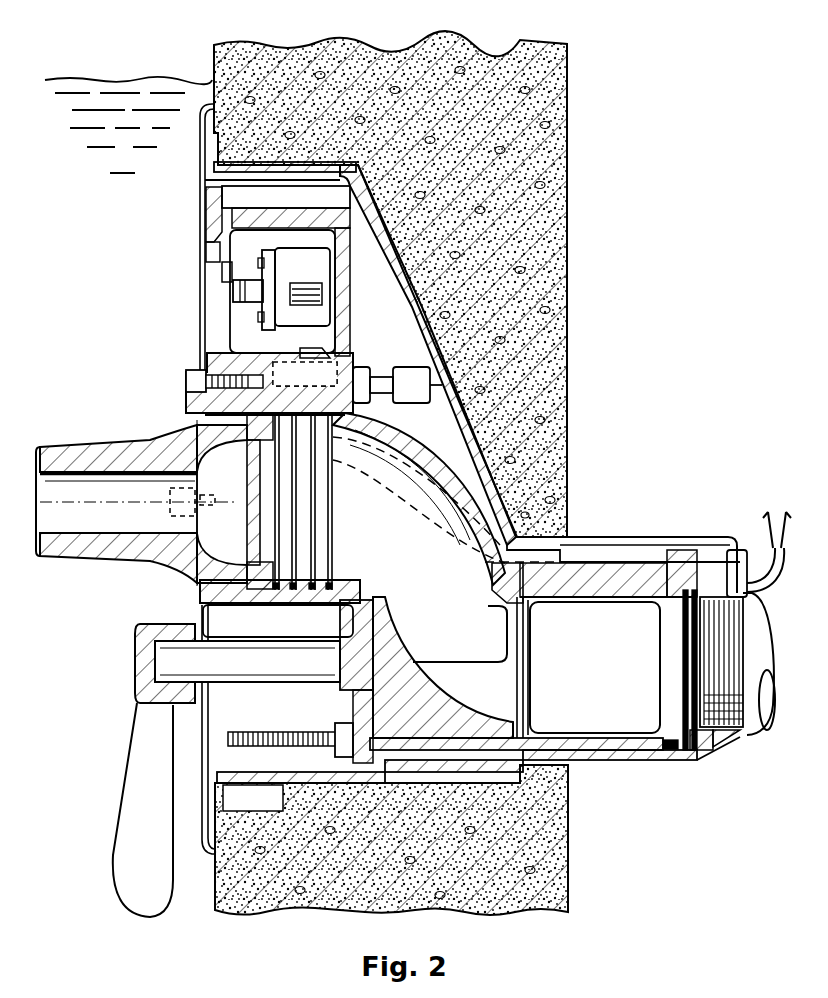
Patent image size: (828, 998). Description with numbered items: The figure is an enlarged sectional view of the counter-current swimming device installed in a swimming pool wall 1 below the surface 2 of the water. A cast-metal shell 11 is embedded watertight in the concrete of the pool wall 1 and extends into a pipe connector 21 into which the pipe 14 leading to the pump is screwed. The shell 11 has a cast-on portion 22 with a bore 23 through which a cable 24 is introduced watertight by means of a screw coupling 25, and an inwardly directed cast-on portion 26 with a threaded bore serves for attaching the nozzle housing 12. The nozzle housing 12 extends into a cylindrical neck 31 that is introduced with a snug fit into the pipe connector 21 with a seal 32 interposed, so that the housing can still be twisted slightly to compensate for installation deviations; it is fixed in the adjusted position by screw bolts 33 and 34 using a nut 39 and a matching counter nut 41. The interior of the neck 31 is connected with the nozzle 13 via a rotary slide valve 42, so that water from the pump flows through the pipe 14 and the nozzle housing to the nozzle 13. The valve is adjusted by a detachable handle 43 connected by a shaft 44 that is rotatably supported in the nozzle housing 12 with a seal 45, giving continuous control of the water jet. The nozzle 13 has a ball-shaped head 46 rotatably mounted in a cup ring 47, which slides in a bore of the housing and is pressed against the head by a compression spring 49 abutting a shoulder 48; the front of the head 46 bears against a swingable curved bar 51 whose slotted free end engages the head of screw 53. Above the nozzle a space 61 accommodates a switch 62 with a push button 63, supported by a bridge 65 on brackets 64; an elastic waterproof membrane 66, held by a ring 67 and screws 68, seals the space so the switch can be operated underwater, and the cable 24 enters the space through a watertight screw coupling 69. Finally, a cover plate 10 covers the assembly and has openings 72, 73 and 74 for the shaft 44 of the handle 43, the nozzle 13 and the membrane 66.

The swimming pool wall 1 is at (528, 170).
The surface of the water 2 is at (137, 64).
The cover plate 10 is at (200, 175).
The shell 11 is at (505, 448).
The nozzle housing 12 is at (418, 442).
The nozzle 13 is at (105, 450).
The pipe 14 is at (750, 722).
The pipe connector 21 is at (606, 762).
The cast-on portion 22 is at (650, 545).
The bore 23 is at (597, 560).
The cable 24 is at (428, 545).
The screw coupling 25 is at (737, 545).
The cast-on portion 26 is at (410, 370).
The cylindrical neck 31 is at (592, 740).
The seal 32 is at (668, 750).
The screw bolt 33 is at (382, 377).
The screw bolt 34 is at (278, 730).
The nut 39 is at (338, 735).
The counter nut 41 is at (362, 365).
The rotary slide valve 42 is at (432, 670).
The handle 43 is at (122, 778).
The shaft 44 is at (250, 655).
The seal 45 is at (355, 640).
The ball-shaped head 46 is at (200, 422).
The cup ring 47 is at (278, 438).
The shoulder 48 is at (330, 566).
The compression spring 49 is at (316, 530).
The curved bar 51 is at (215, 378).
The screw 53 is at (185, 503).
The space 61 is at (287, 232).
The switch 62 is at (320, 285).
The push button 63 is at (240, 303).
The brackets 64 is at (320, 250).
The bridge 65 is at (272, 254).
The elastic waterproof membrane 66 is at (222, 272).
The ring 67 is at (206, 215).
The screws 68 is at (200, 385).
The screw coupling 69 is at (280, 375).
The opening 72 is at (200, 624).
The opening 73 is at (200, 592).
The opening 74 is at (212, 248).